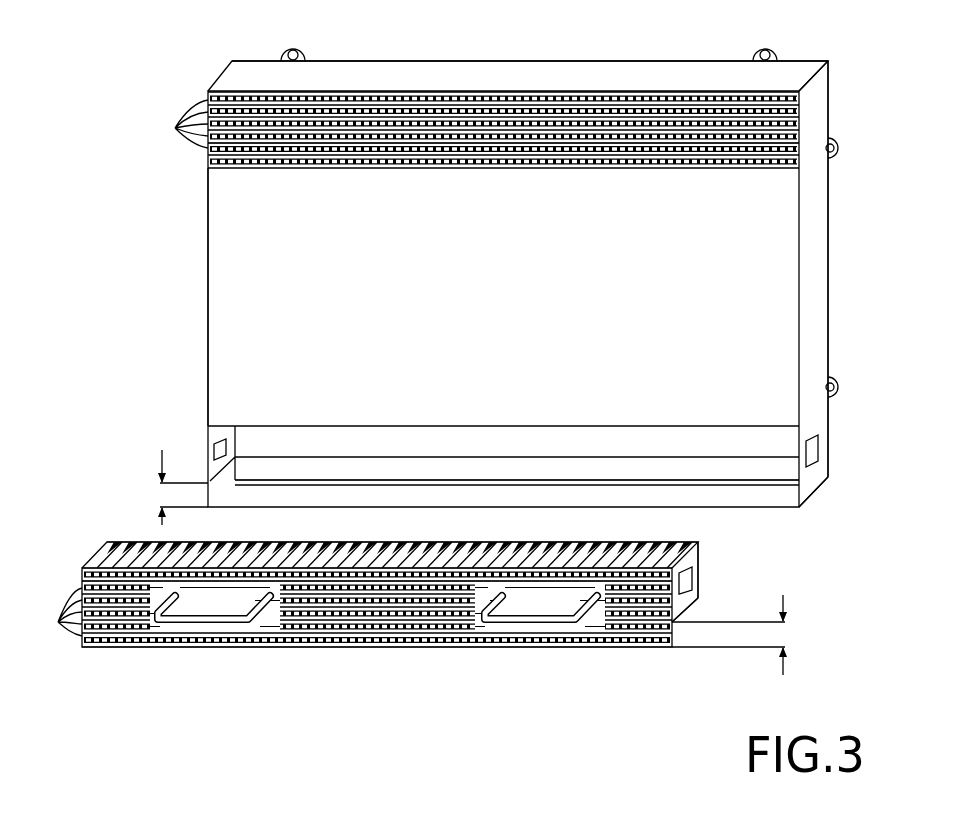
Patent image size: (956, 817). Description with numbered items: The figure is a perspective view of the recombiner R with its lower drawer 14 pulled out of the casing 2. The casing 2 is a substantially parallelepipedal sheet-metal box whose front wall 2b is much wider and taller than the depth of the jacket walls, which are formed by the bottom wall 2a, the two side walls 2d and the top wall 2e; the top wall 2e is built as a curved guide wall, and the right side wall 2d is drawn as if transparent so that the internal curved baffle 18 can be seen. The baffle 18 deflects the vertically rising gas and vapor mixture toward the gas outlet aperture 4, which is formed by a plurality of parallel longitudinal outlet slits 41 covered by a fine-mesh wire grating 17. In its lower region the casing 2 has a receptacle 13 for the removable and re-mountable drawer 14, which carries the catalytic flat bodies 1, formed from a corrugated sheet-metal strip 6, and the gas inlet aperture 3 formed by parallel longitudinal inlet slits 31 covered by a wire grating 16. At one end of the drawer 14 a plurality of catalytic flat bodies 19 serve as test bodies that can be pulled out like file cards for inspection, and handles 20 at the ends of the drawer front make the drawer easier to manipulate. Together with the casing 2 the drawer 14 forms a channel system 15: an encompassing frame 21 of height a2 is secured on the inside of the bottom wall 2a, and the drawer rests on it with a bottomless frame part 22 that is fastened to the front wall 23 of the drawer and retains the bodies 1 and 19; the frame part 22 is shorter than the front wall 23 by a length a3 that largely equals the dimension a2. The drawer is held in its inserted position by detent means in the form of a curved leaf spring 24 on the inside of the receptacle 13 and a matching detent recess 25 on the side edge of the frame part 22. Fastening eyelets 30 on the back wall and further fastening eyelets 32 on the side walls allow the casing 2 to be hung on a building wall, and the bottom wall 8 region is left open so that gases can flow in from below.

The catalytic flat bodies 1 is at (660, 538).
The casing 2 is at (829, 227).
The bottom wall 2a is at (821, 490).
The front wall 2b is at (248, 293).
The side wall 2d is at (822, 308).
The top wall 2e is at (470, 62).
The gas inlet aperture 3 is at (292, 650).
The gas outlet aperture 4 is at (520, 131).
The sheet-metal strip 6 is at (424, 538).
The bottom surface of element 8 is at (440, 650).
The receptacle 13 is at (757, 450).
The drawer 14 is at (695, 590).
The channel system 15 is at (687, 608).
The wire grating 16 is at (110, 615).
The wire grating 17 is at (416, 148).
The internal curved baffle 18 is at (800, 93).
The catalytic flat bodies (test bodies) 19 is at (112, 555).
The handles 20 is at (200, 617).
The encompassing frame 21 is at (362, 455).
The frame part 22 is at (560, 540).
The front wall of the drawer 23 is at (358, 620).
The curved leaf spring 24 is at (228, 450).
The detent recess 25 is at (690, 565).
The means for securing 30 is at (298, 45).
The longitudinal inlet slits 31 is at (58, 622).
The fastening eyelets 32 is at (838, 156).
The longitudinal outlet slits 41 is at (175, 128).
The recombiner R is at (578, 60).
The height of the frame a2 is at (166, 497).
The shortening a3 is at (786, 632).